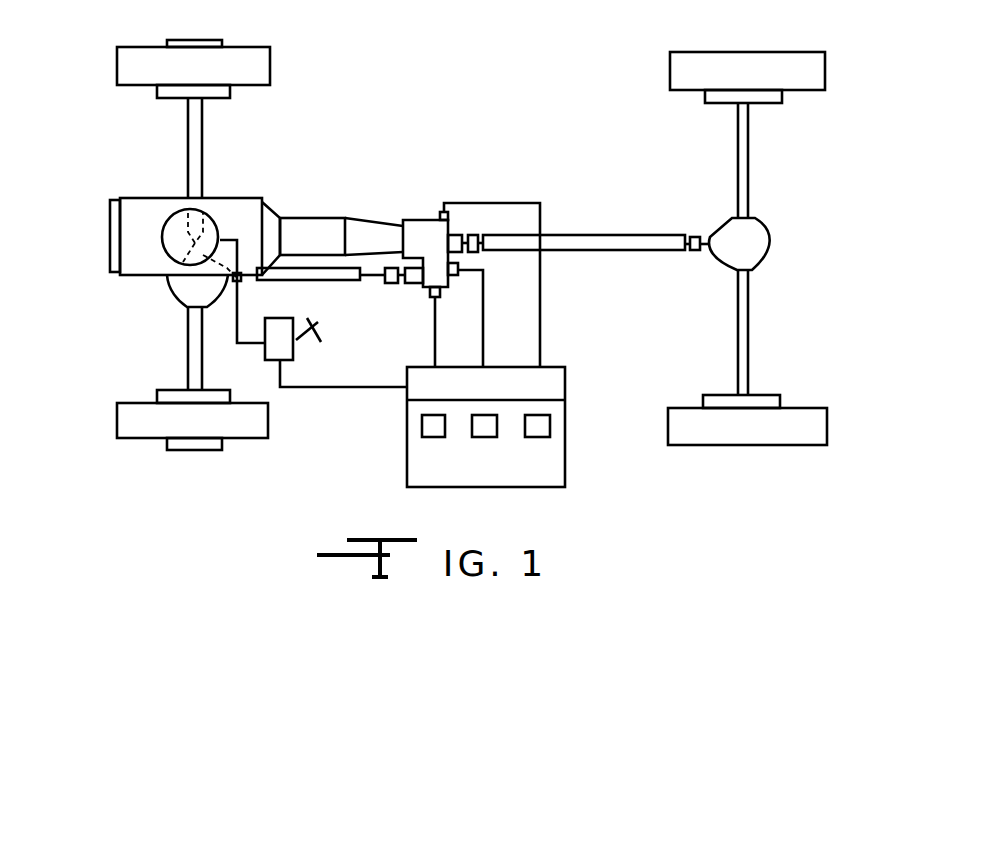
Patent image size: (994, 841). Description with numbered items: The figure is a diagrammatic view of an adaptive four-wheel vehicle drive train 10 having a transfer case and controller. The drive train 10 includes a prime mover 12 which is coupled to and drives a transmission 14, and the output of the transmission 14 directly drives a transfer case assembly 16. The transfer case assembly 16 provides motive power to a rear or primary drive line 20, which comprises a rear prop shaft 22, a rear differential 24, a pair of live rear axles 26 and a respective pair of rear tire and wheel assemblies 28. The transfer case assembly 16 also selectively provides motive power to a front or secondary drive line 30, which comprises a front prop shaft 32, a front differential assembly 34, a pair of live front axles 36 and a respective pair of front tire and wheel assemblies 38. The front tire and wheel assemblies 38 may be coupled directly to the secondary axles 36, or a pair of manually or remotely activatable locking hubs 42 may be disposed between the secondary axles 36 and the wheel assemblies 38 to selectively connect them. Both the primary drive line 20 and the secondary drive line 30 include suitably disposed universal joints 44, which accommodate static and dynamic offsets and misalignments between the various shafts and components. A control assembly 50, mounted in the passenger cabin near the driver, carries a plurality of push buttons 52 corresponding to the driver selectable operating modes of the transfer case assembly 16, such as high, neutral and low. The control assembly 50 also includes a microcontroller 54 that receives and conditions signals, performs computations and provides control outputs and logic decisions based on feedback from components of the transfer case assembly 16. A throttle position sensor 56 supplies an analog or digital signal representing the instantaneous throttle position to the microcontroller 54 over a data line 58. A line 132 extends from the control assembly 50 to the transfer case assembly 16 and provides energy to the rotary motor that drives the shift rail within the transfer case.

The four-wheel vehicle drive train 10 is at (488, 85).
The prime mover 12 is at (238, 213).
The transmission 14 is at (307, 230).
The transfer case assembly 16 is at (426, 212).
The rear or primary drive line 20 is at (692, 183).
The rear or primary prop shaft 22 is at (582, 252).
The rear or primary differential 24 is at (750, 237).
The rear or primary axles 26 is at (748, 147).
The rear or primary tire and wheel assemblies 28 is at (797, 52).
The front or secondary drive line 30 is at (222, 330).
The front or secondary prop shaft 32 is at (322, 283).
The front or secondary differential assembly 34 is at (173, 287).
The front or secondary axles 36 is at (188, 150).
The front or secondary tire and wheel assemblies 38 is at (252, 40).
The locking hubs 42 is at (168, 40).
The universal joints 44 is at (468, 230).
The control assembly 50 is at (541, 409).
The push buttons 52 is at (547, 427).
The microcontroller 54 is at (553, 380).
The throttle position sensor 56 is at (285, 316).
The data line 58 is at (368, 387).
The line 132 is at (483, 317).